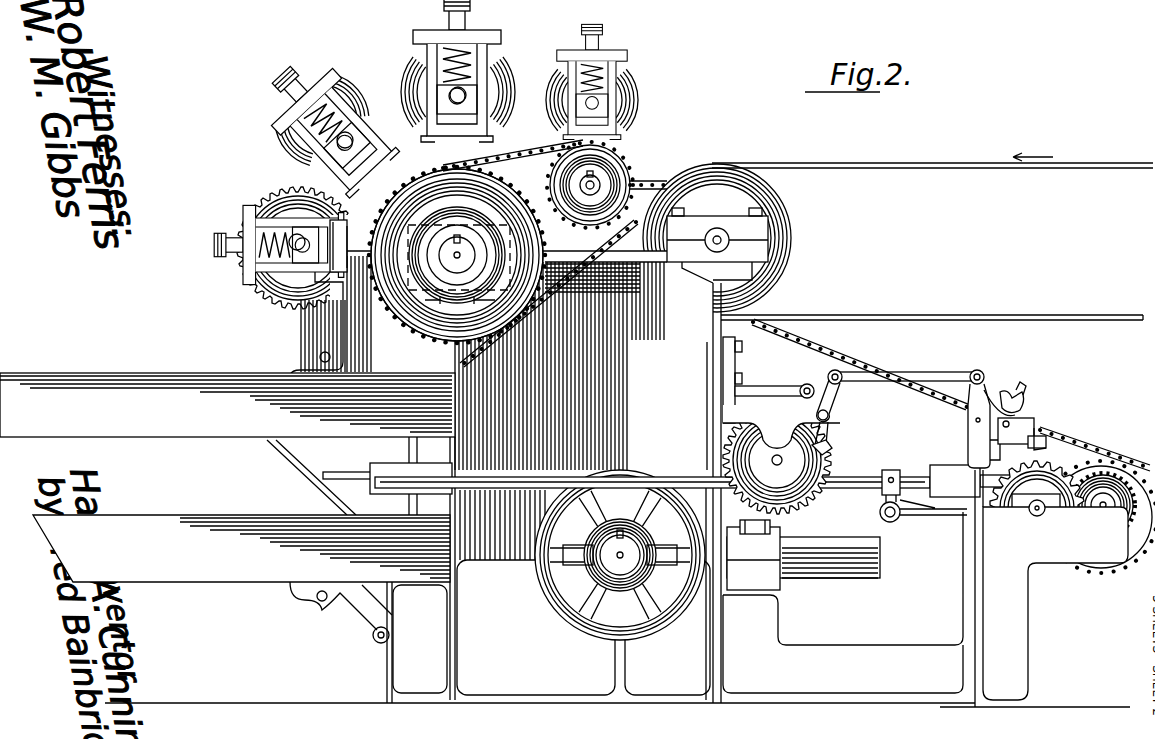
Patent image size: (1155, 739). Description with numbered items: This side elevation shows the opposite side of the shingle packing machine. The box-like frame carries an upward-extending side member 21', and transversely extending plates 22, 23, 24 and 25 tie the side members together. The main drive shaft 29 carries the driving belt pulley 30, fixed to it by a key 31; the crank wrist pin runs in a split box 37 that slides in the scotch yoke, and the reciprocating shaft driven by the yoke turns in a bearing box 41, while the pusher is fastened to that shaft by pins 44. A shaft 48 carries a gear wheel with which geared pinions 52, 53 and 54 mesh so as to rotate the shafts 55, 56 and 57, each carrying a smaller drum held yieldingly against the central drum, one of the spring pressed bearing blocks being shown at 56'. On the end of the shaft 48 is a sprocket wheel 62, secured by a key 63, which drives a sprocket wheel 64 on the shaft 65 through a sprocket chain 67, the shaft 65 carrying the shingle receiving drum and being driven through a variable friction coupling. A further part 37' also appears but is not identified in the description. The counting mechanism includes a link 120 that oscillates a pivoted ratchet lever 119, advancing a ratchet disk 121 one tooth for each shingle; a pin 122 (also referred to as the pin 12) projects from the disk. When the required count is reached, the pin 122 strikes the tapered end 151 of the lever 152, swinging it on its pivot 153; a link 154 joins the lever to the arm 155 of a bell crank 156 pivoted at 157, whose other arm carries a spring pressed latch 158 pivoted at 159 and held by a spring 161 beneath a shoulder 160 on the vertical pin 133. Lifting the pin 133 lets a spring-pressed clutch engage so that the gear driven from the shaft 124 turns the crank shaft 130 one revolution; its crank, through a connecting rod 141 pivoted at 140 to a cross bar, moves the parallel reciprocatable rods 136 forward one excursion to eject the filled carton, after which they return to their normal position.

The pin 12 is at (1118, 460).
The upward-extending side member 21' is at (531, 101).
The transversely extending plate 22 is at (612, 60).
The transversely extending plate 23 is at (483, 40).
The transversely extending plate 24 is at (316, 78).
The transversely extending plate 25 is at (240, 222).
The main drive shaft 29 is at (634, 552).
The driving belt pulley 30 is at (603, 472).
The key 31 is at (624, 536).
The split box 37 is at (620, 555).
The frame neck 37' is at (350, 231).
The bearing box 41 is at (581, 183).
The pins 44 is at (717, 228).
The shaft 48 is at (448, 302).
The geared pinion 52 is at (405, 60).
The geared pinion 53 is at (292, 186).
The geared pinion 54 is at (298, 197).
The shaft 55 is at (467, 92).
The shaft 56 is at (377, 127).
The spring pressed bearing block 56' is at (347, 121).
The shaft 57 is at (302, 235).
The sprocket wheel 62 is at (398, 318).
The key 63 is at (466, 240).
The sprocket wheel 64 is at (672, 172).
The shaft 65 is at (605, 176).
The sprocket chain 67 is at (566, 290).
The ratchet lever 119 is at (815, 381).
The link 120 is at (770, 386).
The ratchet disk 121 is at (845, 455).
The pin 122 is at (832, 450).
The shaft 124 is at (1103, 510).
The crank shaft 130 is at (1037, 514).
The pin 133 is at (1072, 440).
The reciprocatable rods 136 is at (855, 478).
The pivot 140 is at (888, 522).
The connecting rod 141 is at (952, 518).
The tapered end 151 is at (830, 430).
The lever 152 is at (872, 374).
The pivot 153 is at (838, 395).
The link 154 is at (955, 374).
The arm 155 is at (1010, 322).
The bell crank 156 is at (1012, 392).
The pivot 157 is at (1025, 398).
The spring pressed latch 158 is at (1036, 426).
The pivot 159 is at (975, 424).
The shoulder 160 is at (1045, 432).
The spring 161 is at (1028, 442).